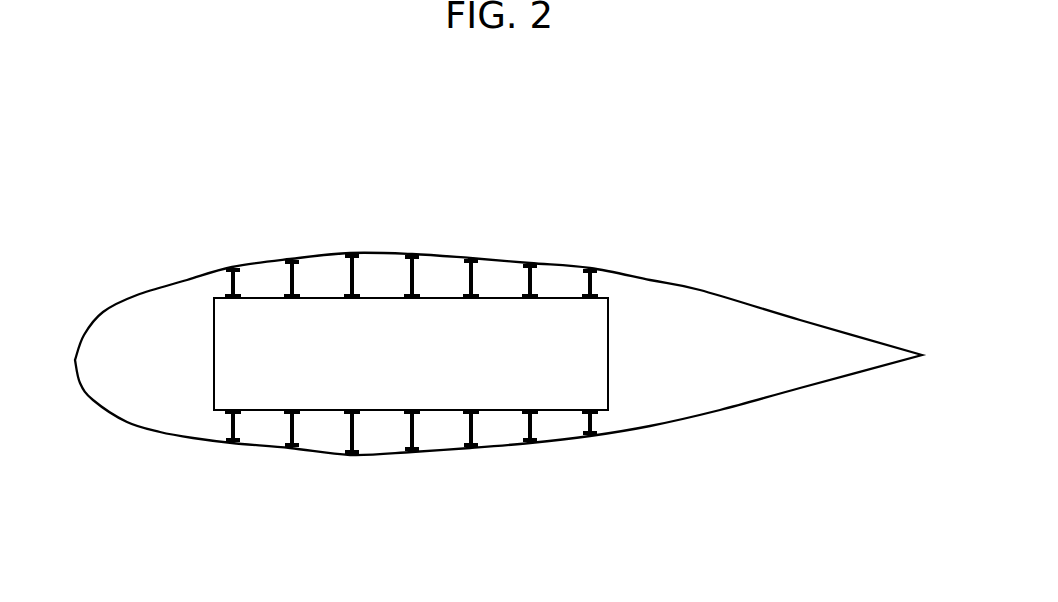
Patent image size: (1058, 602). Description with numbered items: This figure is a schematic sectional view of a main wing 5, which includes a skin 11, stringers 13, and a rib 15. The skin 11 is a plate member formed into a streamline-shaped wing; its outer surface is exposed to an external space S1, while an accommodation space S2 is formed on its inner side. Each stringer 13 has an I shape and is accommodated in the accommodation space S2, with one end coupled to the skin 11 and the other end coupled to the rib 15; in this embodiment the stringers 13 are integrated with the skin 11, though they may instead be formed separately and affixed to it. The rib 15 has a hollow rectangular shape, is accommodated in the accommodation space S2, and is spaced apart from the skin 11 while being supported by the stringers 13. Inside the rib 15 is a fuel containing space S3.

The main wing 5 is at (454, 140).
The skin 11 is at (660, 272).
The stringers 13 is at (239, 285).
The rib 15 is at (610, 354).
The external space S1 is at (164, 256).
The accommodation space S2 is at (165, 365).
The fuel containing space S3 is at (428, 365).